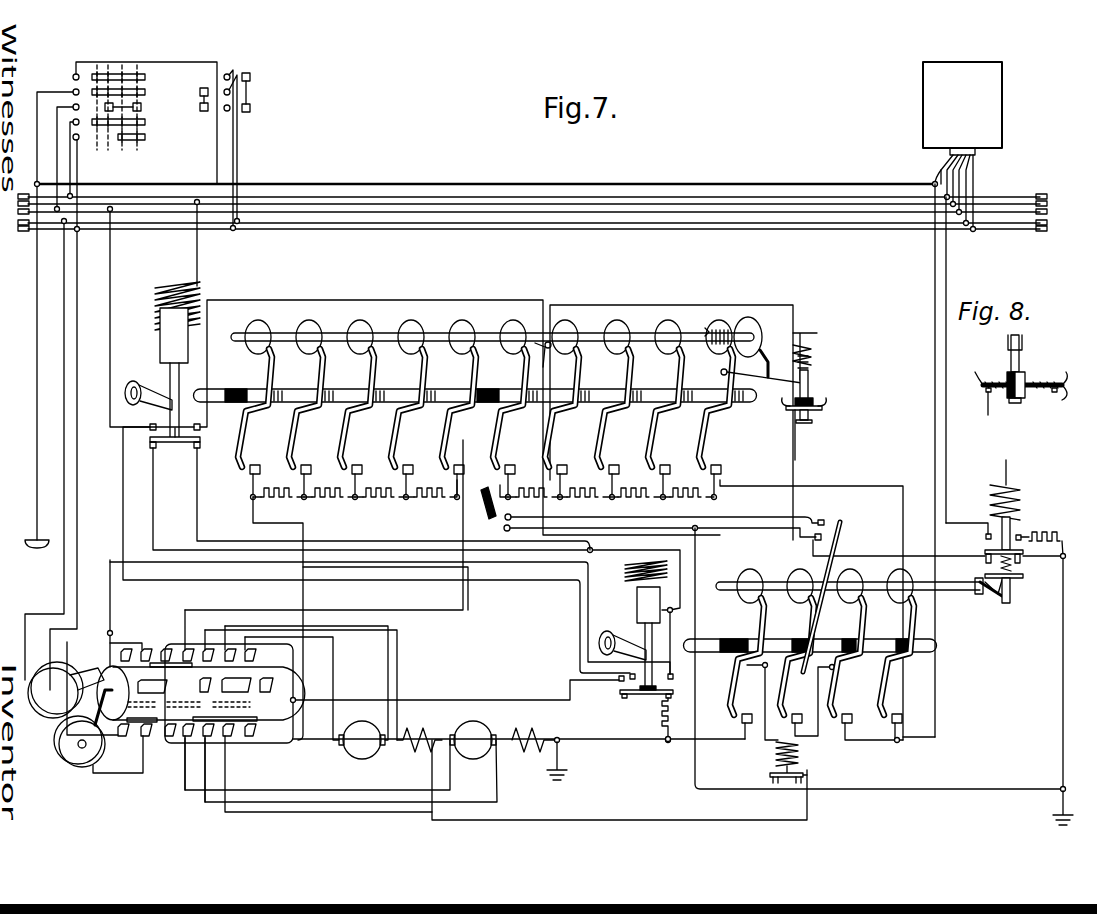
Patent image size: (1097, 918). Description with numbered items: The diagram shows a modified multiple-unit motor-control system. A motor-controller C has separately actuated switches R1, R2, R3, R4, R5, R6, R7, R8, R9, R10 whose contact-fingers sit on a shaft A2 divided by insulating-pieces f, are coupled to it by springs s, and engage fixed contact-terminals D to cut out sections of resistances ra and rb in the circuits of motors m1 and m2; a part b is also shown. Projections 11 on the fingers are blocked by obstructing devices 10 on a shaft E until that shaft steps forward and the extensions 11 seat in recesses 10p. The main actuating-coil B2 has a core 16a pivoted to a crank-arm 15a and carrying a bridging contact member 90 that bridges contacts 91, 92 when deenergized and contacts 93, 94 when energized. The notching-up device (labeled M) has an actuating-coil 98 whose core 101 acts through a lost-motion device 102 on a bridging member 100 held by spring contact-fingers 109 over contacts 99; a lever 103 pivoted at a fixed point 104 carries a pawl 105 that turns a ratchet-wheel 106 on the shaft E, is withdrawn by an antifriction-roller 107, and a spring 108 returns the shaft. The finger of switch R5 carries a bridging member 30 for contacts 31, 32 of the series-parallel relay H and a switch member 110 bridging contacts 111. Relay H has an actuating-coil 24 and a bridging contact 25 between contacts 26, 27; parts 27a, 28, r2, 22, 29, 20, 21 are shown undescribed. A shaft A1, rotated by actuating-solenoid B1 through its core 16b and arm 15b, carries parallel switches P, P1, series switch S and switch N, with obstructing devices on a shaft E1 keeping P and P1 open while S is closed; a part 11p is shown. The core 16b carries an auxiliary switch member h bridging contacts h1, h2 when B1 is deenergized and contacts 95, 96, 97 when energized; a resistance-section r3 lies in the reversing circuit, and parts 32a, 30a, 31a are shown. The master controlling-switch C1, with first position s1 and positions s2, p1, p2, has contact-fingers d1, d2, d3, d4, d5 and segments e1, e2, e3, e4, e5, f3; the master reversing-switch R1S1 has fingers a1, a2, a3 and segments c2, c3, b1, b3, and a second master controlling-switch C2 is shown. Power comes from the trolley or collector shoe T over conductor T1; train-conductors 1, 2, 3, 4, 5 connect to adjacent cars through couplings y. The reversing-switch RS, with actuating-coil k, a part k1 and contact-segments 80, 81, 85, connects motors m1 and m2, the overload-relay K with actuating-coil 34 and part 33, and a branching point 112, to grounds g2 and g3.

In FIG. 7, the conductor T1 is at (625, 184).
In FIG. 7, the train-conductor 1 is at (493, 229).
In FIG. 7, the train-conductor 2 is at (535, 223).
In FIG. 7, the train-conductor 3 is at (573, 212).
In FIG. 7, the train-conductor 4 is at (607, 204).
In FIG. 7, the train-conductor 5 is at (640, 197).
In FIG. 7, the coupling y is at (24, 234).
In FIG. 7, the master controlling-switch C2 is at (940, 399).
In FIG. 7, the master controlling-switch C1 is at (146, 123).
In FIG. 7, the contact-finger d1 is at (70, 74).
In FIG. 7, the contact-finger d2 is at (70, 90).
In FIG. 7, the contact d3 is at (70, 105).
In FIG. 7, the contact-finger d4 is at (70, 120).
In FIG. 7, the contact d5 is at (70, 135).
In FIG. 7, the trolley or collector shoe T is at (30, 531).
In FIG. 7, the first operative position s1 is at (97, 103).
In FIG. 7, the switch line s2 is at (109, 103).
In FIG. 7, the switch line p' p1 is at (124, 103).
In FIG. 7, the switch line p2 is at (138, 103).
In FIG. 7, the contact-segment e1 is at (145, 77).
In FIG. 7, the contact-segment e2 is at (145, 92).
In FIG. 7, the contact bar e3 is at (141, 107).
In FIG. 7, the contact bar e4 is at (145, 122).
In FIG. 7, the contact bar e5 is at (145, 137).
In FIG. 7, the contact f3 is at (141, 110).
In FIG. 7, the contact-segment c2 is at (200, 88).
In FIG. 7, the contact-segment c3 is at (200, 111).
In FIG. 7, the contact-finger a1 is at (228, 141).
In FIG. 7, the contact-finger a2 is at (238, 137).
In FIG. 7, the contact-finger a3 is at (225, 111).
In FIG. 7, the contact-segment b1 is at (250, 76).
In FIG. 7, the contact-segment b3 is at (250, 110).
In FIG. 7, the master reversing-switch R1S1 is at (300, 92).
In FIG. 7, the main actuating-coil B2 is at (177, 265).
In FIG. 7, the core 16a is at (165, 360).
In FIG. 7, the crank-arm 15a is at (160, 403).
In FIG. 7, the bridging contact member 90 is at (175, 442).
In FIG. 7, the contact 91 is at (150, 448).
In FIG. 7, the contact 92 is at (200, 448).
In FIG. 7, the contact 93 is at (150, 430).
In FIG. 7, the contact 94 is at (200, 427).
In FIG. 7, the motor-controller C is at (451, 476).
In FIG. 7, the shaft E is at (438, 333).
In FIG. 7, the shaft A2 is at (448, 389).
In FIG. 7, the insulating-piece f is at (236, 389).
In FIG. 7, the spring s is at (280, 383).
In FIG. 7, the obstructing device 10 is at (262, 322).
In FIG. 7, the recess 10p is at (248, 342).
In FIG. 7, the projection 11 is at (270, 346).
In FIG. 7, the controller-switch R10 is at (260, 410).
In FIG. 7, the controller-switch R9 is at (311, 410).
In FIG. 7, the controller-switch R8 is at (362, 410).
In FIG. 7, the controller-switch R7 is at (413, 410).
In FIG. 7, the controller-switch R6 is at (464, 410).
In FIG. 7, the controller-switch R5 is at (515, 410).
In FIG. 7, the controller-switch R4 is at (567, 410).
In FIG. 7, the controller-switch R3 is at (619, 410).
In FIG. 7, the controller-switch R2 is at (670, 410).
In FIG. 7, the controller-switch R1 is at (721, 410).
In FIG. 7, the resistance rb is at (345, 497).
In FIG. 7, the resistance ra is at (714, 497).
In FIG. 7, the contact-terminal D is at (722, 475).
In FIG. 7, the contact b is at (464, 470).
In FIG. 7, the bridging switch member 30 is at (495, 505).
In FIG. 7, the contact 31 is at (511, 527).
In FIG. 7, the contact 32 is at (512, 514).
In FIG. 7, the switch member 110 is at (540, 360).
In FIG. 7, the contact 111 is at (551, 350).
In FIG. 7, the magnet M is at (818, 348).
In FIG. 7, the spring 108 is at (720, 328).
In FIG. 7, the ratchet-wheel 106 is at (750, 320).
In FIG. 7, the pawl or dog 105 is at (768, 350).
In FIG. 7, the fixed point 104 is at (724, 369).
In FIG. 7, the lever 103 is at (800, 360).
In FIG. 7, the actuating-coil 98 is at (812, 352).
In FIG. 7, the core 101 is at (808, 380).
In FIG. 8, the core 101 is at (1019, 345).
In FIG. 7, the bridging member 100 is at (813, 400).
In FIG. 8, the bridging member 100 is at (1028, 380).
In FIG. 7, the lost-motion device 102 is at (786, 408).
In FIG. 8, the lost-motion device 102 is at (1007, 376).
In FIG. 7, the contact 99 is at (808, 420).
In FIG. 8, the contact 99 is at (1052, 392).
In FIG. 7, the antifriction-roller 107 is at (790, 398).
In FIG. 7, the spring contact-finger 109 is at (785, 410).
In FIG. 8, the spring contact-finger 109 is at (975, 380).
In FIG. 7, the series-parallel relay H is at (1047, 498).
In FIG. 7, the actuating-coil 24 is at (990, 500).
In FIG. 7, the bridging contact 25 is at (1023, 552).
In FIG. 7, the contact 26 is at (986, 560).
In FIG. 7, the contact 27 is at (1020, 560).
In FIG. 7, the contact 27a is at (986, 538).
In FIG. 7, the contact 28 is at (1021, 535).
In FIG. 7, the resistance r2 is at (1055, 536).
In FIG. 7, the spring 22 is at (1011, 566).
In FIG. 7, the plate 29 is at (1016, 578).
In FIG. 7, the link 20 is at (993, 596).
In FIG. 7, the rod 21 is at (1008, 598).
In FIG. 7, the shaft E1 is at (880, 582).
In FIG. 7, the shaft A1 is at (705, 639).
In FIG. 7, the lever 11' 11p is at (862, 598).
In FIG. 7, the parallel switch P is at (747, 654).
In FIG. 7, the series switch S is at (807, 652).
In FIG. 7, the parallel switch P1 is at (863, 654).
In FIG. 7, the switch N is at (897, 654).
In FIG. 7, the branching point 112 is at (899, 743).
In FIG. 7, the contact 32a is at (824, 520).
In FIG. 7, the contact arm 30a is at (838, 535).
In FIG. 7, the contact 31a is at (815, 540).
In FIG. 7, the actuating-solenoid B1 is at (625, 577).
In FIG. 7, the core 16b is at (648, 638).
In FIG. 7, the arm 15b is at (625, 640).
In FIG. 7, the contact 95 is at (619, 681).
In FIG. 7, the contact 96 is at (630, 676).
In FIG. 7, the contact 97 is at (673, 677).
In FIG. 7, the auxiliary switch member h is at (650, 694).
In FIG. 7, the contact h1 is at (624, 698).
In FIG. 7, the contact h2 is at (671, 696).
In FIG. 7, the resistance-section r3 is at (674, 722).
In FIG. 7, the overload-relay K is at (747, 674).
In FIG. 7, the actuating-coil 34 is at (798, 752).
In FIG. 7, the contact 33 is at (797, 793).
In FIG. 7, the motor m1 is at (475, 700).
In FIG. 7, the motor m2 is at (371, 755).
In FIG. 7, the ground g2 is at (564, 766).
In FIG. 7, the ground g3 is at (1070, 811).
In FIG. 7, the reversing-switch RS is at (249, 711).
In FIG. 7, the auxiliary contact-segment 80 is at (170, 667).
In FIG. 7, the contact-segment 81 is at (145, 680).
In FIG. 7, the contact-segment 85 is at (155, 718).
In FIG. 7, the actuating-coil k is at (35, 703).
In FIG. 7, the pulley k1 is at (68, 752).